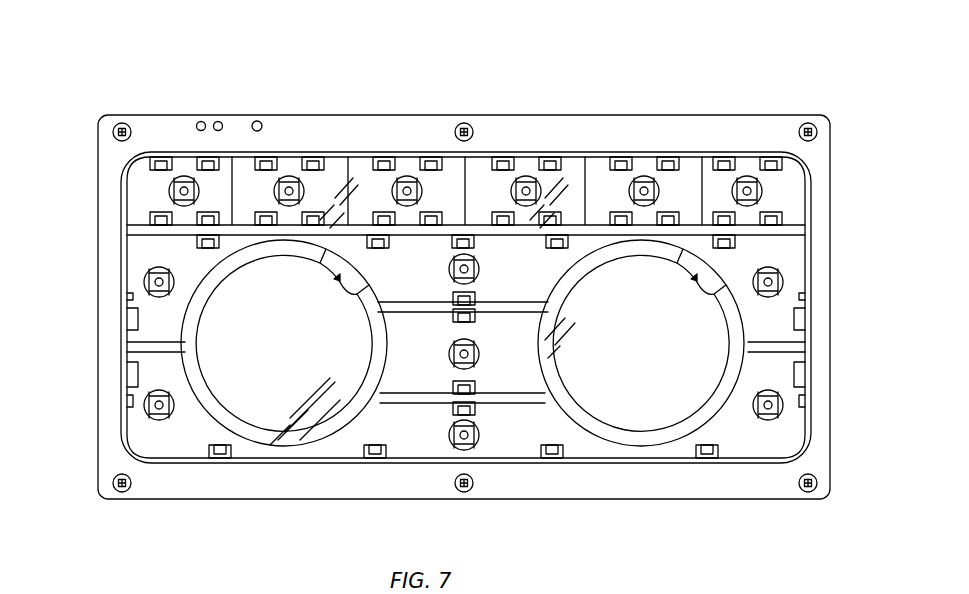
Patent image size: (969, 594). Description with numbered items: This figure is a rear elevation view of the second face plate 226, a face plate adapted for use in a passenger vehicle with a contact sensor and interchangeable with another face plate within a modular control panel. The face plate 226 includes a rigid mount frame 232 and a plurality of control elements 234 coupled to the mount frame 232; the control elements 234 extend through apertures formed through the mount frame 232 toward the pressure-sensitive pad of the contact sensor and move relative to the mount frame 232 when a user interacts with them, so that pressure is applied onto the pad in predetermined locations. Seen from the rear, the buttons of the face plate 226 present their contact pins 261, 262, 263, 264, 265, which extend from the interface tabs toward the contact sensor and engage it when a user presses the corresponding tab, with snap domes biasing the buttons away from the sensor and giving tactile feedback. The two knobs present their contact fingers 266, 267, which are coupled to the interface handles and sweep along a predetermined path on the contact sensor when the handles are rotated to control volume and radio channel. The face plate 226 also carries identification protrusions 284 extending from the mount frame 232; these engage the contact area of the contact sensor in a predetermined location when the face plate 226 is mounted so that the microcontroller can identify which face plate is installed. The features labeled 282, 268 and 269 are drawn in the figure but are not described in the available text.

The second face plate 226 is at (116, 86).
The mount frame 232 is at (818, 160).
The control elements 234 is at (595, 137).
The indicator holes 282 is at (200, 112).
The identification protrusions 284 is at (270, 120).
The contact pin 264 is at (407, 177).
The contact pin 265 is at (525, 177).
The contact pin 261 is at (770, 272).
The contact pin 262 is at (140, 266).
The contact pin 263 is at (472, 438).
The contact finger 266 is at (700, 275).
The contact finger 267 is at (354, 275).
The circular opening 268 is at (580, 314).
The circular opening 269 is at (350, 348).